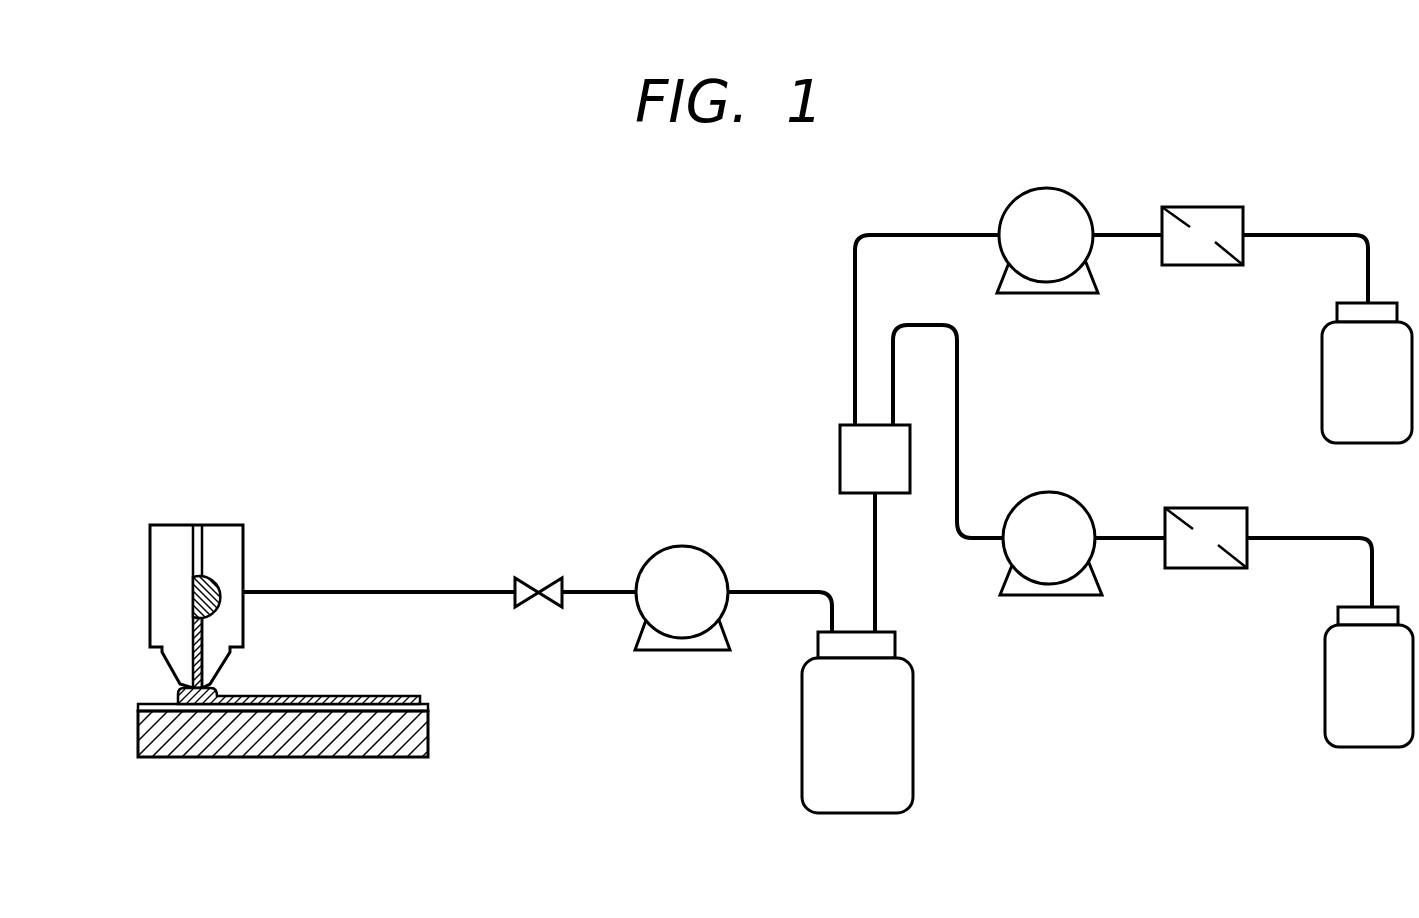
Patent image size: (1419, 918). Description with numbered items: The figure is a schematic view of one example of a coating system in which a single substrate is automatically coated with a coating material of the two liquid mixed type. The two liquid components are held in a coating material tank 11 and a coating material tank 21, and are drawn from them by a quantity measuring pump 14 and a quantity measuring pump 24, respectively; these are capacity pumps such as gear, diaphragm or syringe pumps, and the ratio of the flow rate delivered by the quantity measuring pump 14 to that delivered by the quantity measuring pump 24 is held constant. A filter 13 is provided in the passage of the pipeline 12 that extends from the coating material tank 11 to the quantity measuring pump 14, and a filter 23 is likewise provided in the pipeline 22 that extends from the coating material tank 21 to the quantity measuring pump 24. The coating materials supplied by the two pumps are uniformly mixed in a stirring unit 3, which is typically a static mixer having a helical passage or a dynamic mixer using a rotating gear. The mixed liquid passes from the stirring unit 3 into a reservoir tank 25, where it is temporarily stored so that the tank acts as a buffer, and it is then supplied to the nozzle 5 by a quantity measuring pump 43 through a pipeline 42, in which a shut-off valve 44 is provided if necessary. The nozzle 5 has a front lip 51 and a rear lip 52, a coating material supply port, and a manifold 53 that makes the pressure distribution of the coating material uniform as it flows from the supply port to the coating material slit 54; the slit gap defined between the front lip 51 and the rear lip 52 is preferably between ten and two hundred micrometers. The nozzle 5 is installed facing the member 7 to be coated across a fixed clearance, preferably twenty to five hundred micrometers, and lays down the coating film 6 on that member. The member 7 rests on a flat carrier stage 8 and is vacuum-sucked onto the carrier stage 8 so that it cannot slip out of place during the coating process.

The stirring unit 3 is at (840, 432).
The nozzle 5 is at (150, 576).
The coating film 6 is at (327, 697).
The member to be coated 7 is at (423, 708).
The carrier stage 8 is at (423, 741).
The coating material tank 11 is at (1322, 365).
The pipeline 12 is at (1327, 232).
The filter 13 is at (1192, 207).
The quantity measuring pump 14 is at (1067, 202).
The coating material tank 21 is at (1325, 668).
The pipeline 22 is at (1330, 537).
The filter 23 is at (1193, 508).
The quantity measuring pump 24 is at (1068, 505).
The reservoir tank 25 is at (913, 710).
The pipeline 42 is at (793, 587).
The quantity measuring pump 43 is at (702, 560).
The shut-off valve 44 is at (545, 602).
The front lip 51 is at (200, 537).
The rear lip 52 is at (163, 537).
The manifold 53 is at (218, 578).
The coating material slit 54 is at (202, 640).